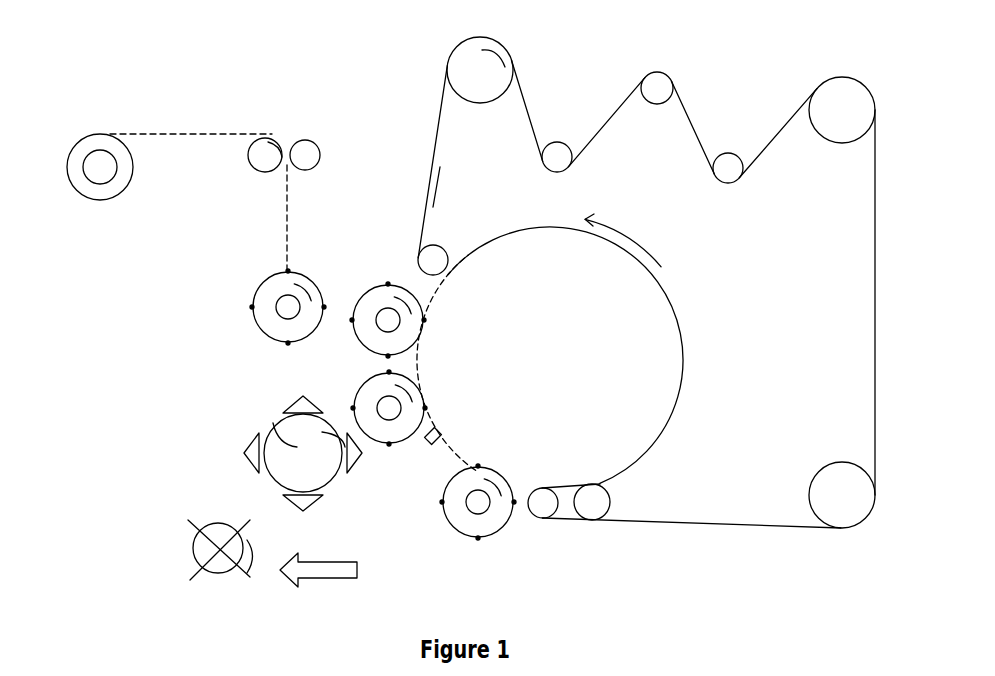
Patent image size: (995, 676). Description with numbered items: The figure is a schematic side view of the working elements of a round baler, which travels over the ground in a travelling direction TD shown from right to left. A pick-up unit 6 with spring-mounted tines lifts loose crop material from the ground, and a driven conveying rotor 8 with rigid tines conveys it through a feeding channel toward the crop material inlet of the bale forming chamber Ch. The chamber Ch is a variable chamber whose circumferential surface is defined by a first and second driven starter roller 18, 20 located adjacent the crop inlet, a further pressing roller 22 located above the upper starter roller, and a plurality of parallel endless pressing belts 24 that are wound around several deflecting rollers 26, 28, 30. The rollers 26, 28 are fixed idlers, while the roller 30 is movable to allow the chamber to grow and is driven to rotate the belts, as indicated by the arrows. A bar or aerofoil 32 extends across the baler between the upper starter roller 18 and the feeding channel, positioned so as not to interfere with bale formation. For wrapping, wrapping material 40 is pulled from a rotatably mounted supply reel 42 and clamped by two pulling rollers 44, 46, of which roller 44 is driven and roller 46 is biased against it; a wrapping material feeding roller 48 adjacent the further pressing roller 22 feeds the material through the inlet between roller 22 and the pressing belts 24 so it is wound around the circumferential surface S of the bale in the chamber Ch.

The pick-up unit 6 is at (232, 522).
The conveying rotor 8 is at (547, 374).
The first driven starter roller 18 is at (367, 413).
The second driven starter roller 20 is at (462, 518).
The further pressing roller 22 is at (368, 335).
The pressing belts 24 is at (440, 113).
The deflecting roller 26 is at (432, 258).
The deflecting roller 28 is at (542, 502).
The deflecting roller 30 is at (497, 78).
The bar or aerofoil 32 is at (440, 430).
The wrapping material 40 is at (287, 222).
The supply reel 42 is at (122, 177).
The driven pulling roller 44 is at (263, 140).
The pulling roller 46 is at (305, 151).
The wrapping material feeding roller 48 is at (262, 312).
The circumferential surface S is at (673, 388).
The bale forming chamber Ch is at (628, 428).
The travelling direction TD is at (328, 568).